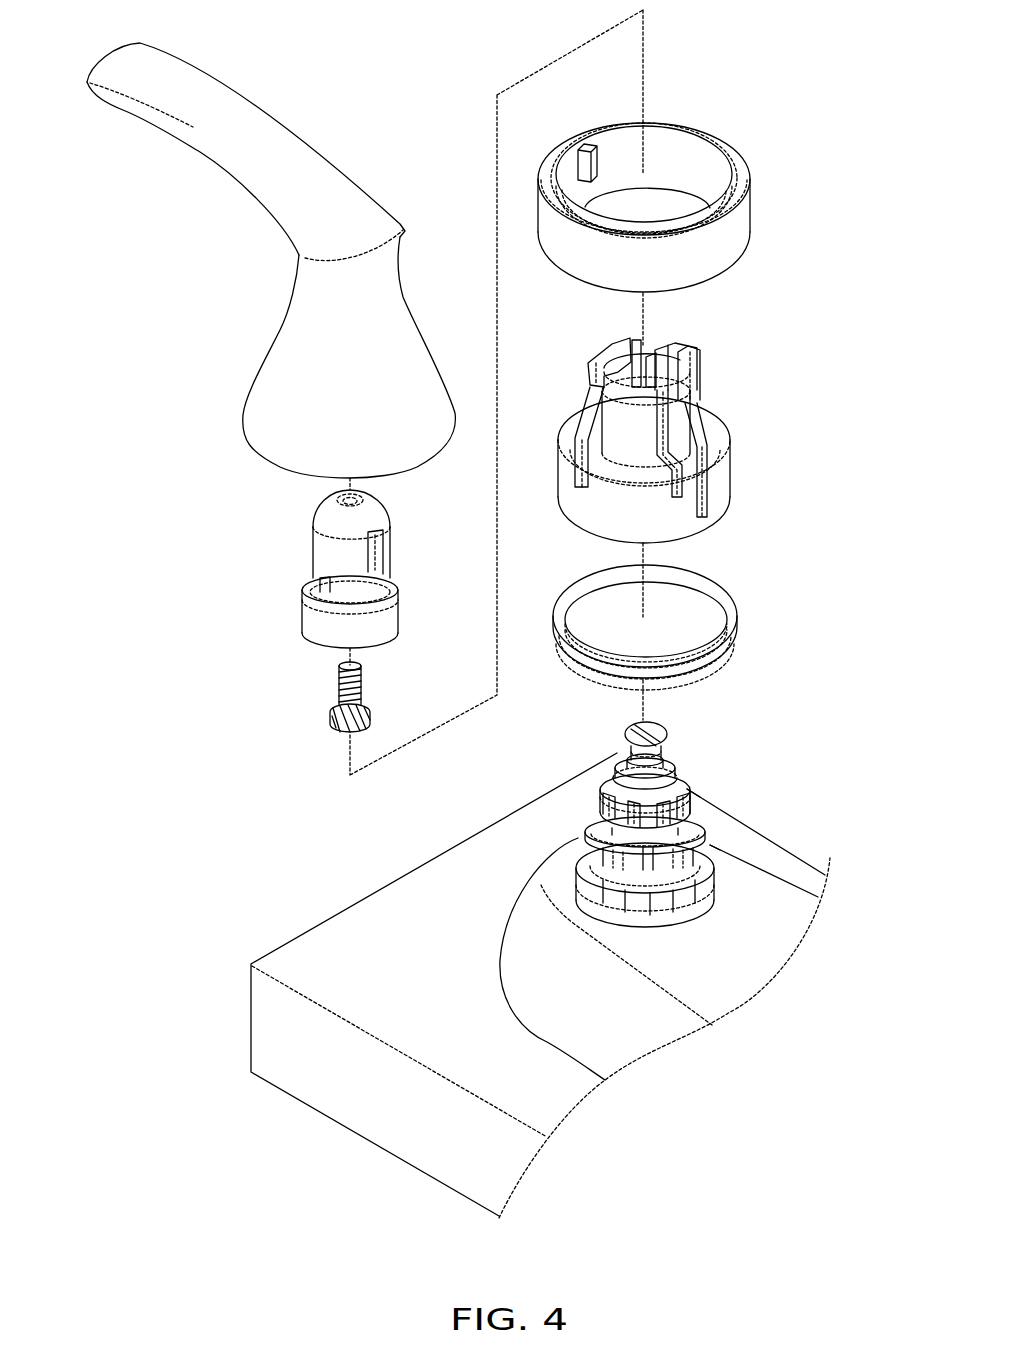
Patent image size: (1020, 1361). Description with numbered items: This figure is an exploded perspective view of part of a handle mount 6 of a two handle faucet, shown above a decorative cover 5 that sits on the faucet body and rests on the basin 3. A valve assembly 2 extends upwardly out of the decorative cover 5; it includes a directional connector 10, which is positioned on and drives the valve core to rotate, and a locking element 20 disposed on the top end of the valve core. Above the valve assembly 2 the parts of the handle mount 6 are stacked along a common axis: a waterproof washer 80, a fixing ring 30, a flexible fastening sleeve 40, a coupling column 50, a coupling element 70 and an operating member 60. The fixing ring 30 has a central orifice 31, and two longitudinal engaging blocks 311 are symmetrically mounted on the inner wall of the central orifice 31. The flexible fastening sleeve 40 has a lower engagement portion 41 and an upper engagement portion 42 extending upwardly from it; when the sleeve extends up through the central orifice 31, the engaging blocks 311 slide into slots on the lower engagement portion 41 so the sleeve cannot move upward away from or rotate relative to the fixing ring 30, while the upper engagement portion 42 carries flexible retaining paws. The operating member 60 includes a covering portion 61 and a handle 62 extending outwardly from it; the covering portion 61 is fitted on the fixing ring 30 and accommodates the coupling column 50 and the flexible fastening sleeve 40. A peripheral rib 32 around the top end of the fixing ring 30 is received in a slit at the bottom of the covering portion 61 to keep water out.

The valve assembly 2 is at (697, 757).
The basin 3 is at (359, 928).
The decorative cover 5 is at (782, 895).
The handle mount 6 is at (165, 464).
The directional connector 10 is at (685, 790).
The locking element 20 is at (658, 723).
The fixing ring 30 is at (732, 118).
The central orifice 31 is at (665, 140).
The longitudinal engaging block 311 is at (597, 163).
The peripheral rib 32 is at (732, 190).
The flexible fastening sleeve 40 is at (743, 435).
The lower engagement portion 41 is at (720, 492).
The upper engagement portion 42 is at (700, 390).
The coupling column 50 is at (290, 585).
The operating member 60 is at (237, 194).
The covering portion 61 is at (290, 377).
The handle 62 is at (262, 128).
The coupling element 70 is at (320, 697).
The waterproof washer 80 is at (743, 620).